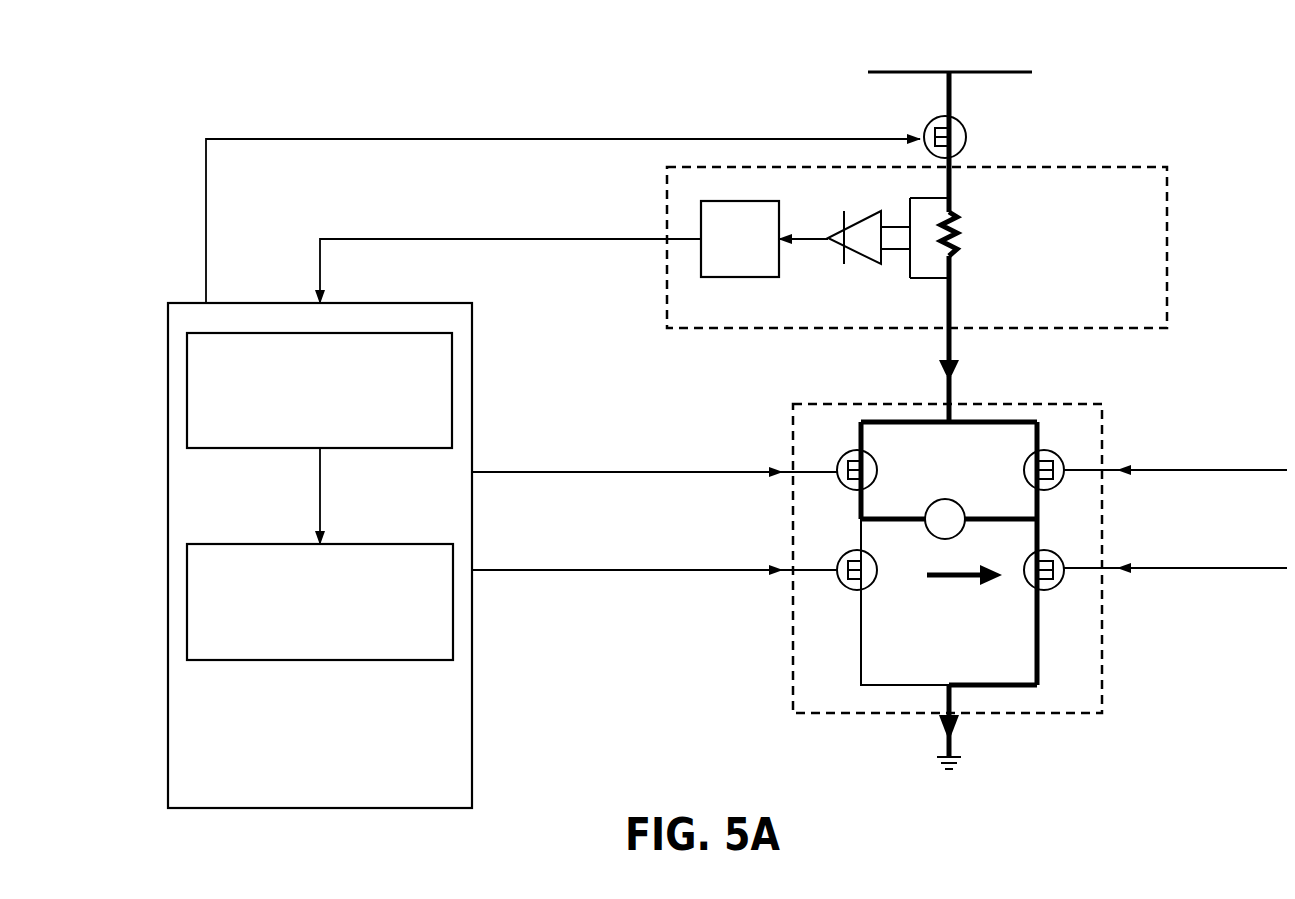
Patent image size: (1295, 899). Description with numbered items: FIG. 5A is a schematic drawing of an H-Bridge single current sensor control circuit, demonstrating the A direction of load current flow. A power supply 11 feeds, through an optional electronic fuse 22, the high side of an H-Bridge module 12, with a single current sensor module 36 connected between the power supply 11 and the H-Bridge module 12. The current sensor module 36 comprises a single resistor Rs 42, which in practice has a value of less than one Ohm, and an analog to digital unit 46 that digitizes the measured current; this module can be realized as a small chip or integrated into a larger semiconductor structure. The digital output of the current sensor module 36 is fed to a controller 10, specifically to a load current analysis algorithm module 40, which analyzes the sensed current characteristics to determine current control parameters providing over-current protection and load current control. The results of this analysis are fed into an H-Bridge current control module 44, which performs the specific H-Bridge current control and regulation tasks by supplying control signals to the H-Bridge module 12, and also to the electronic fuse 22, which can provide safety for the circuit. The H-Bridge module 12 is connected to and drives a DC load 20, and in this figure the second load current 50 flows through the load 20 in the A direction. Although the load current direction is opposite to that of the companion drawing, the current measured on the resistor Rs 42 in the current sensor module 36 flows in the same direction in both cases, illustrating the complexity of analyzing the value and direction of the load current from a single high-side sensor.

The controller 10 is at (168, 553).
The power supply 11 is at (1038, 62).
The H-Bridge module 12 is at (1103, 683).
The load 20 is at (950, 498).
The electronic fuse 22 is at (968, 137).
The current sensor module 36 is at (1087, 167).
The load current analysis algorithm module 40 is at (232, 450).
The resistor Rs 42 is at (957, 243).
The H-Bridge current control module 44 is at (345, 542).
The analog to digital (A/D) unit 46 is at (740, 277).
The current I2 50 is at (953, 577).